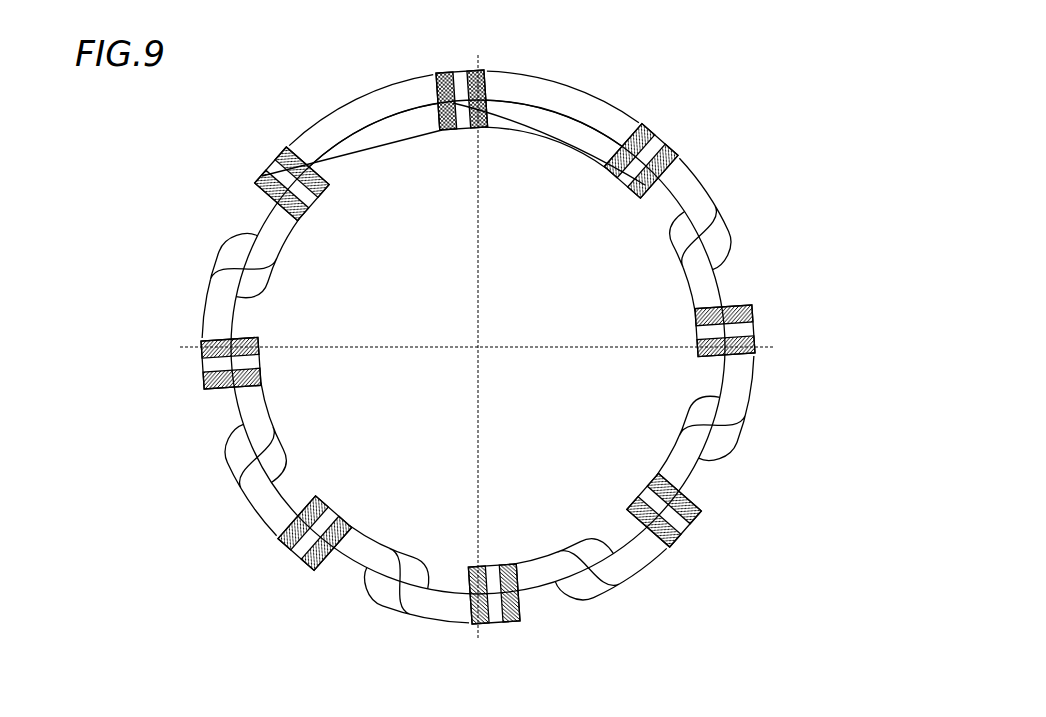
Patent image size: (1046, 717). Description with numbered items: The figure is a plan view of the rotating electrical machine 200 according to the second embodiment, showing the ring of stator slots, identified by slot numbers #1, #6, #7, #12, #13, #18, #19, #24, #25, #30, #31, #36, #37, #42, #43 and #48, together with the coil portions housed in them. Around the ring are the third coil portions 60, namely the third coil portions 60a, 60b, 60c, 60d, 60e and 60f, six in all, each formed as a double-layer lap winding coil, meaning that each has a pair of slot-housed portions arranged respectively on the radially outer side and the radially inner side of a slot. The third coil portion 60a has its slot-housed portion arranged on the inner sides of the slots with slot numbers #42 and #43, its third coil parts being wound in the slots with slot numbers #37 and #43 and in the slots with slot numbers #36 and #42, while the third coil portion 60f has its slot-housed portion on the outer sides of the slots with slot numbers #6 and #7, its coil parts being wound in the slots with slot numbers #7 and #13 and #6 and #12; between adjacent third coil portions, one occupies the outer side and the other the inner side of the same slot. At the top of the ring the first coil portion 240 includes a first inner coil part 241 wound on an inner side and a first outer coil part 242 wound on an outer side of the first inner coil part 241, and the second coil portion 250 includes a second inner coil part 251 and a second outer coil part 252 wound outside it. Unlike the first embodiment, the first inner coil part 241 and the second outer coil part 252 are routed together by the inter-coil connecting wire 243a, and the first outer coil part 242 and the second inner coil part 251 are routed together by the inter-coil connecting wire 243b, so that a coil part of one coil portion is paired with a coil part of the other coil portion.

The rotating electrical machine 200 is at (724, 89).
The first coil portion 240 is at (372, 88).
The first inner coil part 241 is at (438, 72).
The first outer coil part 242 is at (474, 71).
The inter-coil connecting wire 243a is at (524, 126).
The inter-coil connecting wire 243b is at (367, 150).
The second coil portion 250 is at (564, 112).
The second inner coil part 251 is at (473, 132).
The second outer coil part 252 is at (447, 132).
The third coil portion 60 is at (462, 405).
The third coil portion 60a is at (211, 270).
The third coil portion 60b is at (241, 497).
The third coil portion 60c is at (353, 570).
The third coil portion 60d is at (642, 577).
The third coil portion 60e is at (721, 461).
The third coil portion 60f is at (721, 286).
The slot number 1 is at (483, 123).
The slot number 6 is at (656, 122).
The slot number 7 is at (676, 156).
The slot number 12 is at (697, 314).
The slot number 13 is at (696, 351).
The slot number 18 is at (653, 486).
The slot number 19 is at (630, 513).
The slot number 24 is at (520, 575).
The slot number 25 is at (463, 579).
The slot number 30 is at (348, 534).
The slot number 31 is at (316, 511).
The slot number 36 is at (258, 379).
The slot number 37 is at (257, 343).
The slot number 42 is at (300, 209).
The slot number 43 is at (323, 185).
The slot number 48 is at (427, 122).